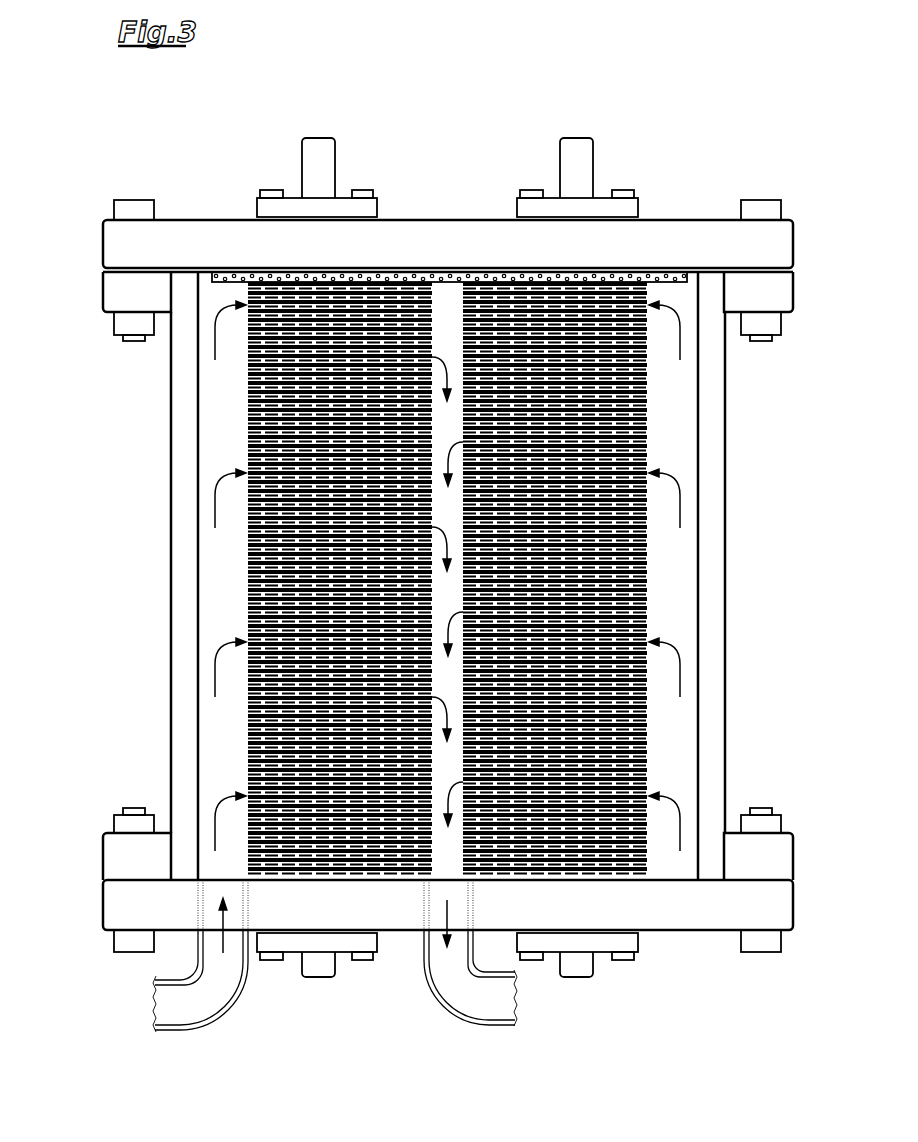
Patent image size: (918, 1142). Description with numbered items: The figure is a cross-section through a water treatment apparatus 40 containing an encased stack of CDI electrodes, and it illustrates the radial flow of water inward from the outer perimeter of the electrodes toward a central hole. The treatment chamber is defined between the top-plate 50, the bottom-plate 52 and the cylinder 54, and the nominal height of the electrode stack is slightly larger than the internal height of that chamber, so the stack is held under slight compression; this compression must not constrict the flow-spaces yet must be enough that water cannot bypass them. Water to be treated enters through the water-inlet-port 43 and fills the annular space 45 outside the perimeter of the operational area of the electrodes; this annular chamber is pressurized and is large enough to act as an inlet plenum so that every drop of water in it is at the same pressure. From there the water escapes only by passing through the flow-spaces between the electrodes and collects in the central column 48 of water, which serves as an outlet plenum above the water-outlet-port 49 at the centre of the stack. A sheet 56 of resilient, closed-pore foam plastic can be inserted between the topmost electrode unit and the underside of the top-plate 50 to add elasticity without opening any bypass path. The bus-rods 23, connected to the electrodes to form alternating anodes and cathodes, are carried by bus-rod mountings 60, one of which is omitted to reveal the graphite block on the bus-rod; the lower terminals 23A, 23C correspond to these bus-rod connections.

The water treatment apparatus 40 is at (637, 95).
The bus-rods 23 is at (572, 158).
The lower left electrical terminal 23A is at (318, 968).
The lower right electrical terminal 23C is at (583, 970).
The water-inlet-port 43 is at (218, 995).
The annular space 45 is at (218, 620).
The column of water 48 is at (450, 303).
The water-outlet-port 49 is at (468, 997).
The top-plate 50 is at (200, 238).
The bottom-plate 52 is at (712, 917).
The cylinder 54 is at (708, 550).
The sheet of resilient foam plastic material 56 is at (668, 272).
The bus-rod mountings 60 is at (612, 200).